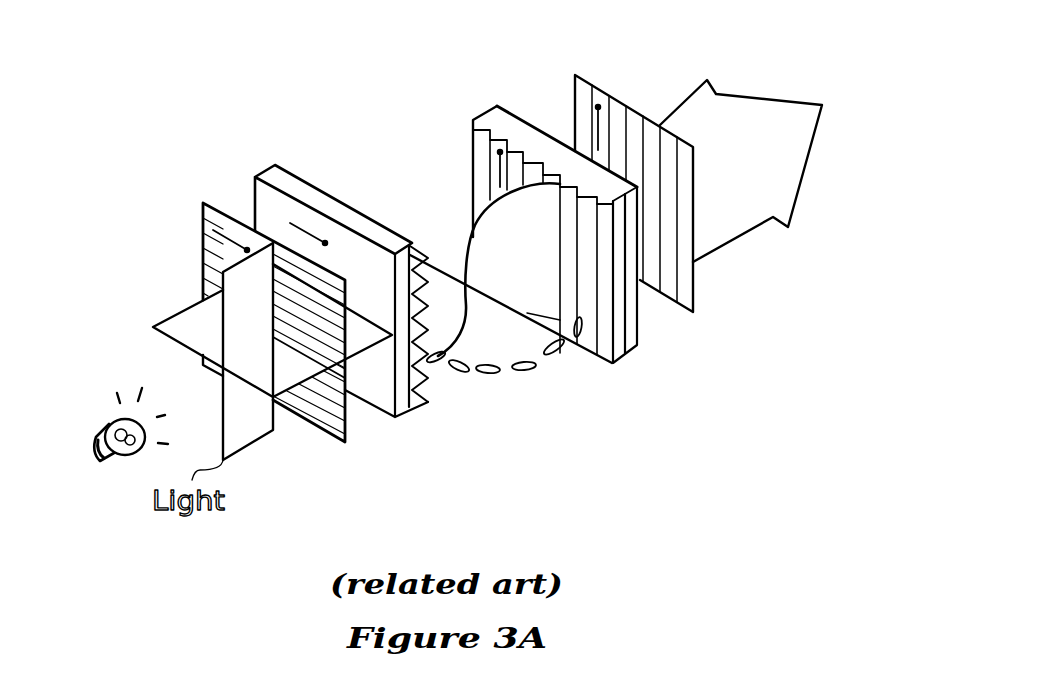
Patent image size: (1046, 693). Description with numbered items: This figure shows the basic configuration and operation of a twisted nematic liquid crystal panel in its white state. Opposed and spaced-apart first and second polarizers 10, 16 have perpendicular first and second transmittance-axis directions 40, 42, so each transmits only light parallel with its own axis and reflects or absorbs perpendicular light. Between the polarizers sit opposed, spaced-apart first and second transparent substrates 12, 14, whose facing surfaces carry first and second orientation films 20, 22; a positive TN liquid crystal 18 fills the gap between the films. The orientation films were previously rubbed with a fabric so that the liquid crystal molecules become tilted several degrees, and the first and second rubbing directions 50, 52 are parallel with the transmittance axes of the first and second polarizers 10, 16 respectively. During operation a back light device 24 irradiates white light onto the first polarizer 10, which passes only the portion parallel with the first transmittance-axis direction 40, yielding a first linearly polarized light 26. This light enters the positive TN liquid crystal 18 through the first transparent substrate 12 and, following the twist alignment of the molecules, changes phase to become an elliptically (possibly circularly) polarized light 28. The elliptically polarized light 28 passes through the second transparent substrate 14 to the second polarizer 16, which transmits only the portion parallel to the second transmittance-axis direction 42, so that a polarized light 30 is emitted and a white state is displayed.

The first polarizer 10 is at (207, 219).
The first transparent substrate 12 is at (404, 403).
The second transparent substrate 14 is at (637, 343).
The second polarizer 16 is at (693, 266).
The positive TN liquid crystal 18 is at (513, 373).
The first orientation film 20 is at (337, 200).
The second orientation film 22 is at (621, 330).
The back light device 24 is at (113, 417).
The first linearly polarized light 26 is at (358, 358).
The elliptically polarized light 28 is at (468, 268).
The polarized light 30 is at (767, 93).
The first transmittance-axis direction 40 is at (225, 238).
The second transmittance-axis direction 42 is at (599, 106).
The first rubbing direction 50 is at (300, 226).
The second rubbing direction 52 is at (500, 150).